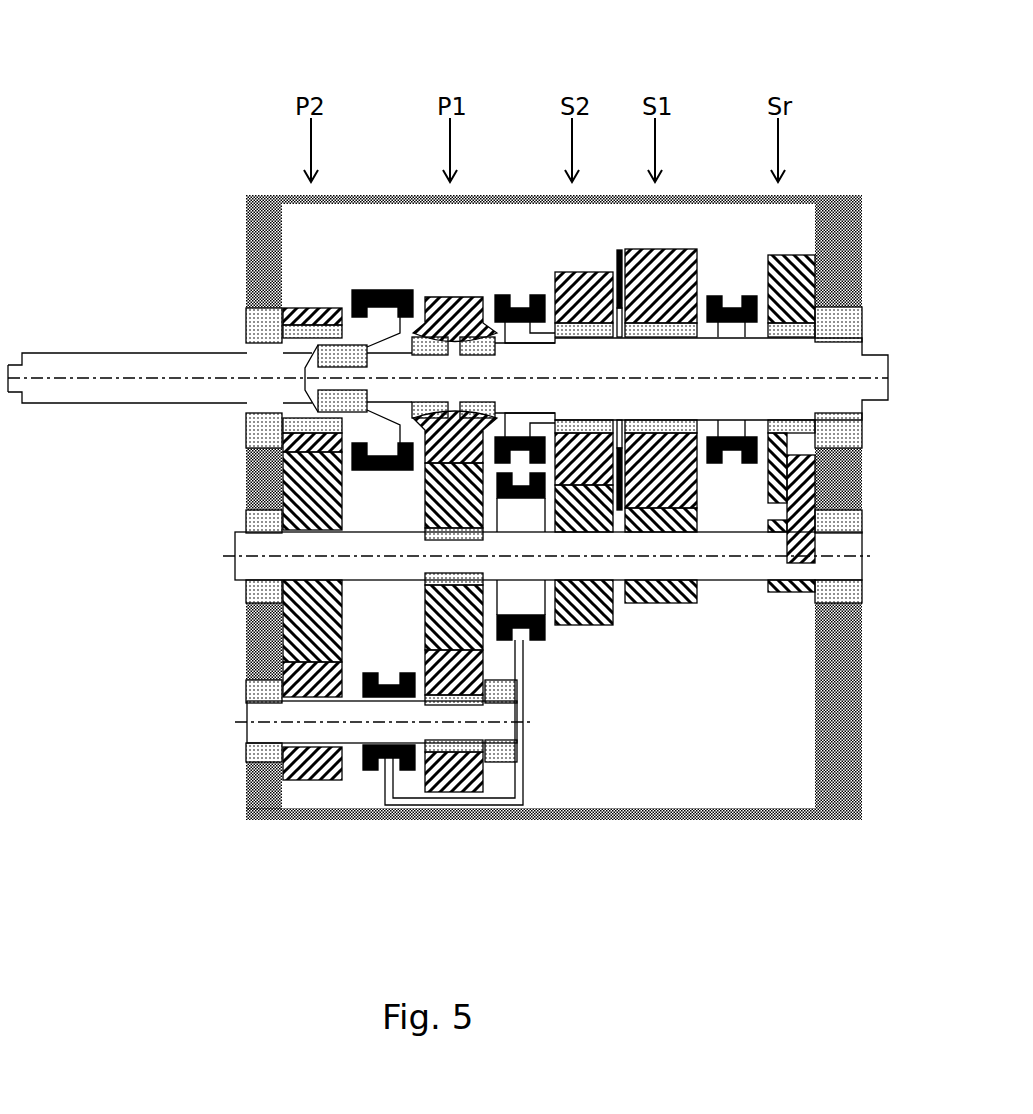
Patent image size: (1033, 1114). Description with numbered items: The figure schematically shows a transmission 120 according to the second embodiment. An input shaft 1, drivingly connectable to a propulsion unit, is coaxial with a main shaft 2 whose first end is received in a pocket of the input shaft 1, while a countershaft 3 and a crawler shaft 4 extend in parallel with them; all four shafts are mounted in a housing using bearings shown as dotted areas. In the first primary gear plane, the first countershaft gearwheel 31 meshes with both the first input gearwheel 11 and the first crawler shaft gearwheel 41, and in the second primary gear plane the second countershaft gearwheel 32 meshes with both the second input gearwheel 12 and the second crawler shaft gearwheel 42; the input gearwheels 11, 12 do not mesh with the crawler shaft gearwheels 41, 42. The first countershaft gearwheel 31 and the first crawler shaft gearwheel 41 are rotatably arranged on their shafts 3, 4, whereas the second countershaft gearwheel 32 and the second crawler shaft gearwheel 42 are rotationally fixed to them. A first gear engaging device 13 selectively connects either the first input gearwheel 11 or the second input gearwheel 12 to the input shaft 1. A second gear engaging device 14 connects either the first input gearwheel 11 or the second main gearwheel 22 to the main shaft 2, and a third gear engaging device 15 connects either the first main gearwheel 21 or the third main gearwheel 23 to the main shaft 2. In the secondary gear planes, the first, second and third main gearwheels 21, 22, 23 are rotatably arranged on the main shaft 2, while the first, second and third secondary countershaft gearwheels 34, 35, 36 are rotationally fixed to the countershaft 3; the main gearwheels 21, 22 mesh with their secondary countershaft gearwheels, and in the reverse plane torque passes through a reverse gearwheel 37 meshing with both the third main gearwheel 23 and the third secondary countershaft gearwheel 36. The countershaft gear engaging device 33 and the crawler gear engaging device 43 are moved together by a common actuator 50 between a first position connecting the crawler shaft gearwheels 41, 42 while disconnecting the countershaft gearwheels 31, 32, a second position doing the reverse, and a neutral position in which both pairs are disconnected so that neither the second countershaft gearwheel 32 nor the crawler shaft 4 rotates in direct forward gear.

The transmission 120 is at (209, 84).
The input shaft 1 is at (75, 355).
The main shaft 2 is at (741, 369).
The countershaft 3 is at (240, 553).
The crawler shaft 4 is at (253, 728).
The first input gearwheel 11 is at (465, 297).
The second input gearwheel 12 is at (298, 308).
The first gear engaging device 13 is at (362, 290).
The second gear engaging device 14 is at (518, 295).
The third gear engaging device 15 is at (735, 296).
The first main gearwheel 21 is at (660, 249).
The second main gearwheel 22 is at (583, 272).
The third main gearwheel 23 is at (795, 255).
The first countershaft gearwheel 31 is at (425, 635).
The second countershaft gearwheel 32 is at (283, 648).
The countershaft gear engaging device 33 is at (542, 640).
The first secondary countershaft gearwheel 34 is at (680, 603).
The second secondary countershaft gearwheel 35 is at (598, 625).
The third secondary countershaft gearwheel 36 is at (778, 592).
The reverse gearwheel 37 is at (770, 485).
The first crawler shaft gearwheel 41 is at (455, 790).
The second crawler shaft gearwheel 42 is at (313, 780).
The crawler gear engaging device 43 is at (370, 770).
The common actuator 50 is at (524, 790).